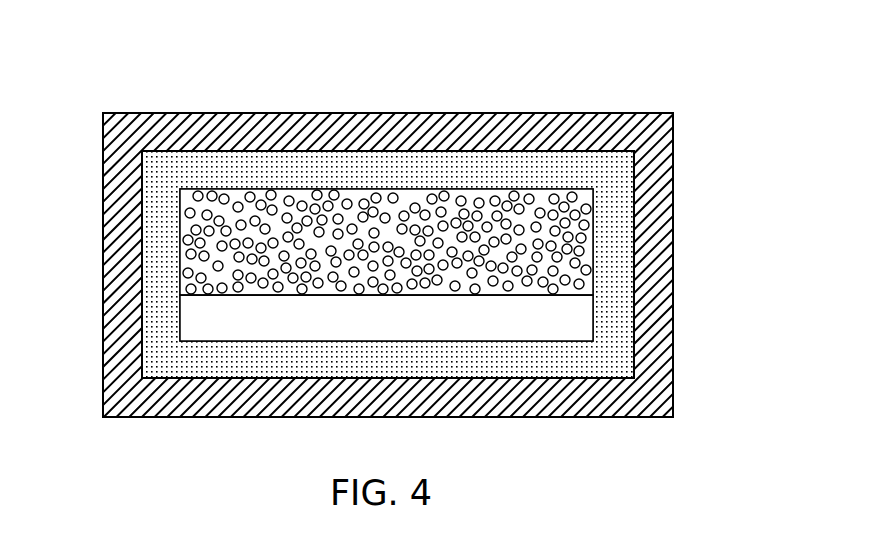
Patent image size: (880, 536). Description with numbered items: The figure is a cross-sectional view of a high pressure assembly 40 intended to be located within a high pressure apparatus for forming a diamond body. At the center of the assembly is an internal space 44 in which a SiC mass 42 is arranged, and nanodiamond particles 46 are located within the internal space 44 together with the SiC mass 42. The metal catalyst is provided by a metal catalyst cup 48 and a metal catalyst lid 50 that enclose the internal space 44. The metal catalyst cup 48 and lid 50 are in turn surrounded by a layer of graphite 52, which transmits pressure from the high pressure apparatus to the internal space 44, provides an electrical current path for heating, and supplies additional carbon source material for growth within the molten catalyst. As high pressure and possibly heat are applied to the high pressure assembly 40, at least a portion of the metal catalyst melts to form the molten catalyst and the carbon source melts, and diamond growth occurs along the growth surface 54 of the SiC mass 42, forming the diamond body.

The high pressure assembly 40 is at (440, 242).
The SiC mass 42 is at (558, 340).
The internal space 44 is at (555, 218).
The nanodiamond particles 46 is at (402, 218).
The metal catalyst cup 48 is at (141, 288).
The metal catalyst lid 50 is at (457, 148).
The layer of graphite 52 is at (160, 112).
The growth surface 54 is at (555, 287).